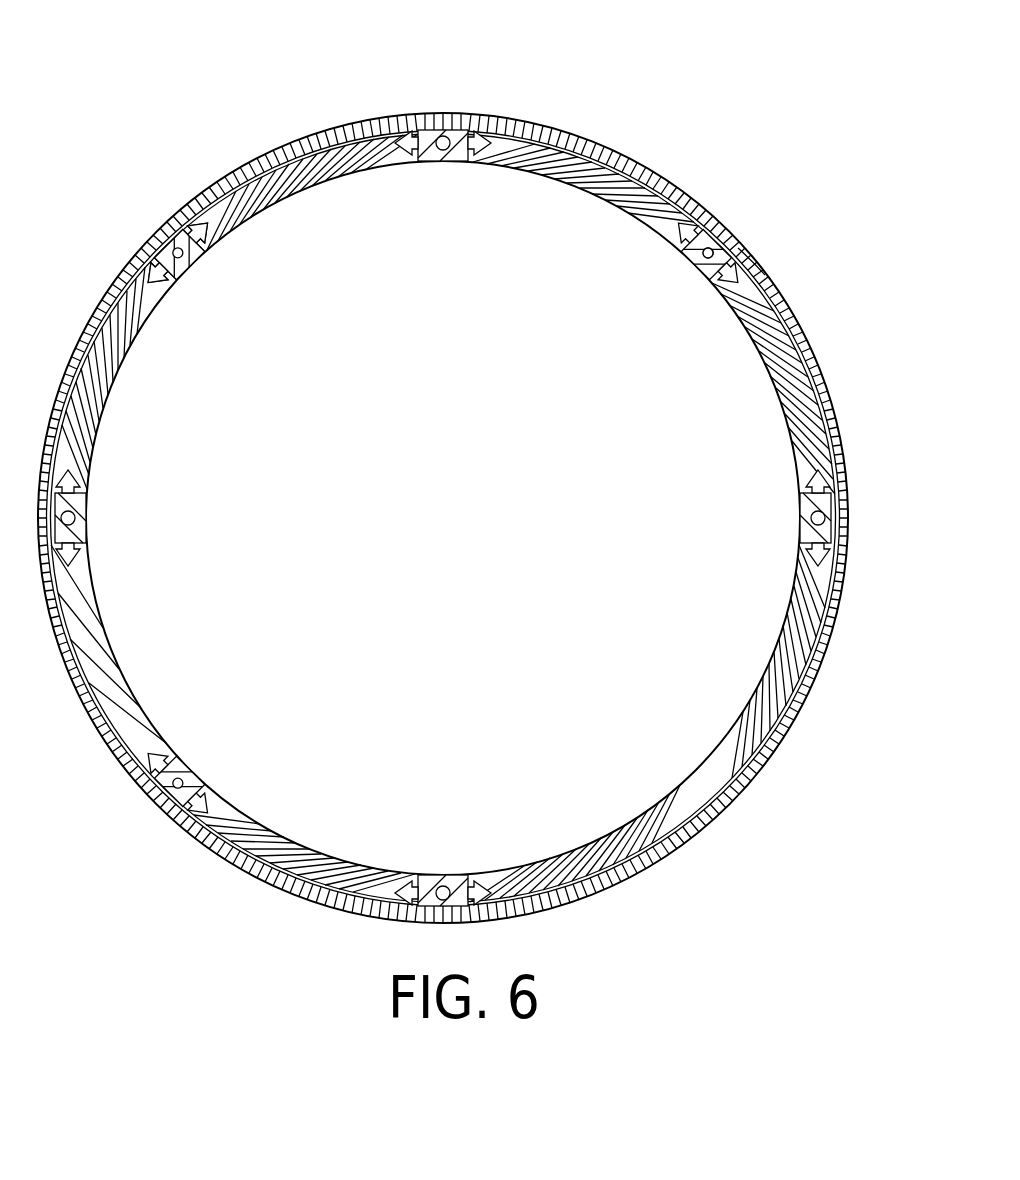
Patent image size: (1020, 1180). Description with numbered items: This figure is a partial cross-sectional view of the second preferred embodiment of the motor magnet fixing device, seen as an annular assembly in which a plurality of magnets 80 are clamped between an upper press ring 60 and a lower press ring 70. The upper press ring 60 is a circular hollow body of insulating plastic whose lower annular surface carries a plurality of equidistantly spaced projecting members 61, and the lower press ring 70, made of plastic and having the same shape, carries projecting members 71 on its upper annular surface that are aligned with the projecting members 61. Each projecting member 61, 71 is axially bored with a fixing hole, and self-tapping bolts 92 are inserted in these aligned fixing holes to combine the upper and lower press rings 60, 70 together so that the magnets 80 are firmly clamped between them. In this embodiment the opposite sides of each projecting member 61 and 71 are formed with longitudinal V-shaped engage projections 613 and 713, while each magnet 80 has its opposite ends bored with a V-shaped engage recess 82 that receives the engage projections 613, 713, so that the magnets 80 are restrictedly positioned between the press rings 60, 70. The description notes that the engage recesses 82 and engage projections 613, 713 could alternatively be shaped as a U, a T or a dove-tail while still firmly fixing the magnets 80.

The upper press ring 60 is at (838, 388).
The projecting member 61 is at (827, 500).
The lower press ring 70 is at (282, 126).
The projecting member 71 is at (155, 250).
The V-shaped engage projection 713 is at (203, 218).
The magnet 80 is at (563, 138).
The V-shaped engage recess 82 is at (752, 262).
The self-tapping bolt 92 is at (706, 247).
The V-shaped engage projection 613 is at (463, 196).